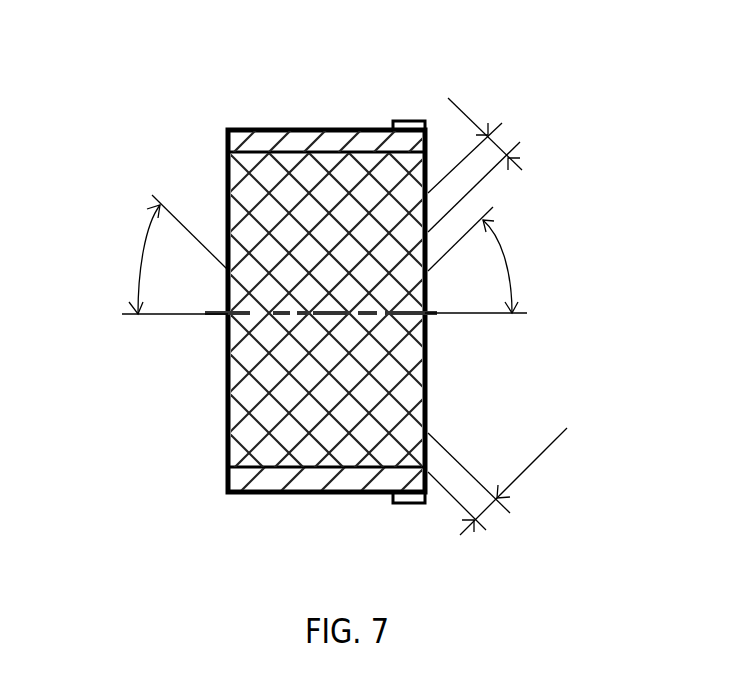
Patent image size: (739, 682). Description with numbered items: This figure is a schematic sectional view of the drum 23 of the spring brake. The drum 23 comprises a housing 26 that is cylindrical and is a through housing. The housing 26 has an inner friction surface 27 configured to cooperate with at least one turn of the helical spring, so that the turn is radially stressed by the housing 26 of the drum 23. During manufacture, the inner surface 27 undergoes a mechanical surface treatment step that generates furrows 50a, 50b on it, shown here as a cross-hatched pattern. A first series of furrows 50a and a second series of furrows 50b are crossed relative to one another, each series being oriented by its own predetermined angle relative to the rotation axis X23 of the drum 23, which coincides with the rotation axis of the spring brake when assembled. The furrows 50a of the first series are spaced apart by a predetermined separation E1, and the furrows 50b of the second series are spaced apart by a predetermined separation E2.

The drum 23 is at (251, 255).
The housing 26 is at (392, 372).
The inner friction surface 27 is at (262, 467).
The furrows of the first series 50a is at (407, 178).
The furrows of the second series 50b is at (377, 347).
The rotation axis of the drum X23 is at (370, 317).
The predetermined separation E1 is at (476, 149).
The predetermined separation E2 is at (511, 481).